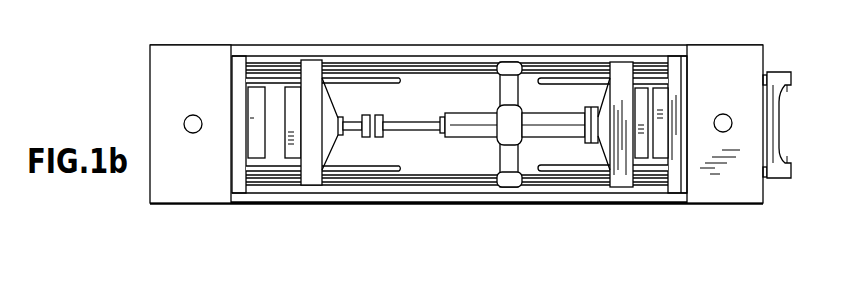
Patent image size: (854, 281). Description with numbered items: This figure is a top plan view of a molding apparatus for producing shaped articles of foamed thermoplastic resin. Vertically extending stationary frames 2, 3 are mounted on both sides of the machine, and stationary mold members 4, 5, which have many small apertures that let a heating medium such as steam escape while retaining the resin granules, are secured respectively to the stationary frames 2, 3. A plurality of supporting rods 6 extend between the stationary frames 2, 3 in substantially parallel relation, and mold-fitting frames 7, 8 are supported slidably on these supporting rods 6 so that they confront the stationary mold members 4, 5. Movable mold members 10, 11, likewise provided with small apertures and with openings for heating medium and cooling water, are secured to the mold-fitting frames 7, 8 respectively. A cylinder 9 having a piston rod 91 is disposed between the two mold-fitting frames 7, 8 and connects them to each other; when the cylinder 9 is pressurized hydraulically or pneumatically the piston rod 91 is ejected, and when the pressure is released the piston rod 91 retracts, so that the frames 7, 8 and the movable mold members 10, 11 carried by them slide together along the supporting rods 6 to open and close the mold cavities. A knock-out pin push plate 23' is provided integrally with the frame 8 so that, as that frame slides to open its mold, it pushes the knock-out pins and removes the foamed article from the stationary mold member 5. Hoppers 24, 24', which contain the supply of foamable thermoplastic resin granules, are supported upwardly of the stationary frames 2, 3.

The stationary frame 2 is at (236, 170).
The stationary frame 3 is at (677, 66).
The stationary mold member 4 is at (256, 159).
The stationary mold member 5 is at (657, 158).
The supporting rods 6 is at (446, 66).
The mold-fitting frame 7 is at (318, 62).
The mold-fitting frame 8 is at (618, 177).
The cylinder 9 is at (555, 122).
The movable mold member 10 is at (290, 159).
The movable mold member 11 is at (642, 158).
The hopper 24 is at (190, 107).
The hopper 24' is at (725, 107).
The knock-out pin push plate 23' is at (796, 115).
The piston rod 91 is at (399, 120).